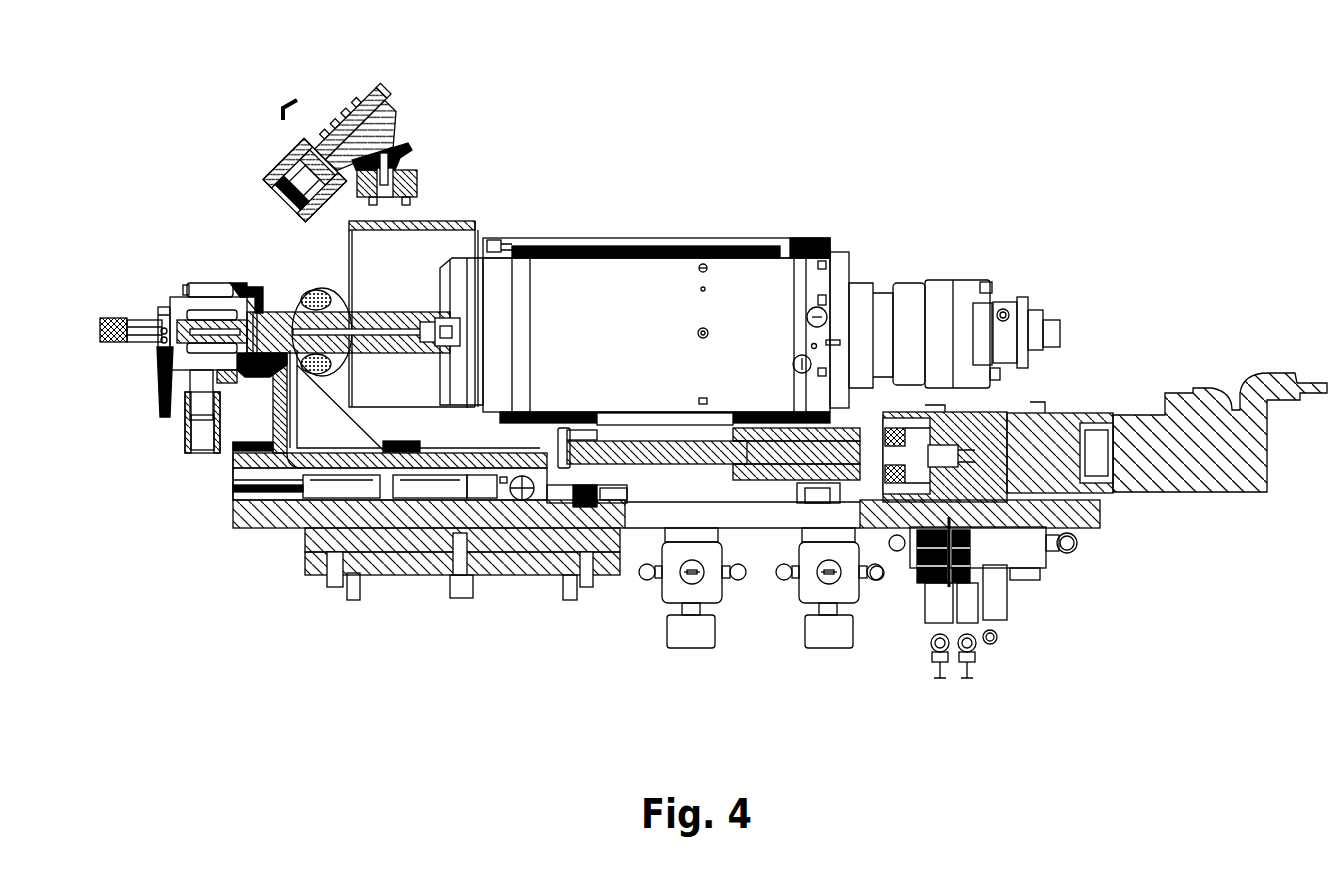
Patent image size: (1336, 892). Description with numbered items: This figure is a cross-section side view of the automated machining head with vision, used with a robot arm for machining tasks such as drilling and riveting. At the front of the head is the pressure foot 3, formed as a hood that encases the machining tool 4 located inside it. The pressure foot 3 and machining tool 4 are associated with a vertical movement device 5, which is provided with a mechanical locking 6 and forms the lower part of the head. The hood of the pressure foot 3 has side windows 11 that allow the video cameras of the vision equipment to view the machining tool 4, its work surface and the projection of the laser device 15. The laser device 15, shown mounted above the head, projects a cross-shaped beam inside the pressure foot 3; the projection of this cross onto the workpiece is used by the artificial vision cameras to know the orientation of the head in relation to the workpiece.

The pressure foot 3 is at (157, 348).
The machining tool 4 is at (207, 330).
The vertical movement device 5 is at (662, 457).
The mechanical locking 6 is at (433, 488).
The side windows 11 is at (208, 288).
The laser device 15 is at (390, 94).